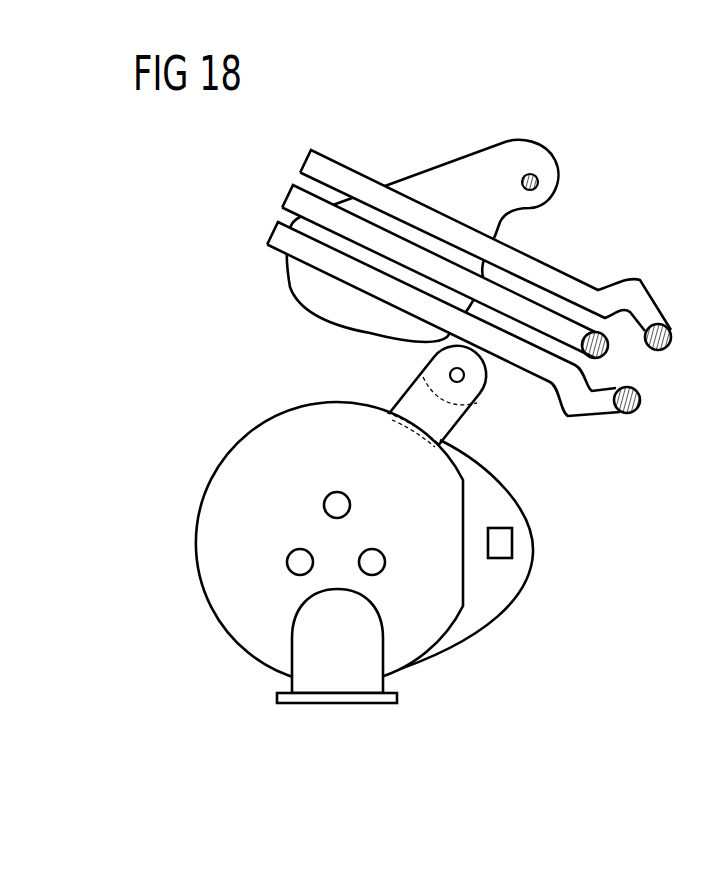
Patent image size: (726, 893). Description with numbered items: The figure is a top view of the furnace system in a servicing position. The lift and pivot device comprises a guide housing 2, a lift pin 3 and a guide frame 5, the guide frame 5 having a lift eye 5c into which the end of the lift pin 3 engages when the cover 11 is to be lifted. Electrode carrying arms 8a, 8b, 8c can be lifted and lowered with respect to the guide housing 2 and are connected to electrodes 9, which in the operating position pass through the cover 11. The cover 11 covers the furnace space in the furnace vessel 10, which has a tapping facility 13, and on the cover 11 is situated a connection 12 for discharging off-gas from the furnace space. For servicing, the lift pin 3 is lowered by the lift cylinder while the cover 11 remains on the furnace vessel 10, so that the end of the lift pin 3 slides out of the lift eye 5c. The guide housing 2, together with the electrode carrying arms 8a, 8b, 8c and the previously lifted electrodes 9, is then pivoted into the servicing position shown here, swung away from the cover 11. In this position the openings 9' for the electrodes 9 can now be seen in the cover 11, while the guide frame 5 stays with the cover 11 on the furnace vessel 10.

The guide housing 2 is at (449, 164).
The lift pin 3 is at (538, 176).
The guide frame 5 is at (465, 427).
The lift eye 5c is at (465, 376).
The electrode carrying arm 8a is at (272, 251).
The electrode carrying arm 8b is at (291, 186).
The electrode carrying arm 8c is at (343, 163).
The electrodes 9 is at (649, 398).
The openings for the electrodes 9' is at (326, 585).
The furnace vessel 10 is at (440, 658).
The cover 11 is at (212, 563).
The connection 12 is at (337, 705).
The tapping facility 13 is at (513, 543).